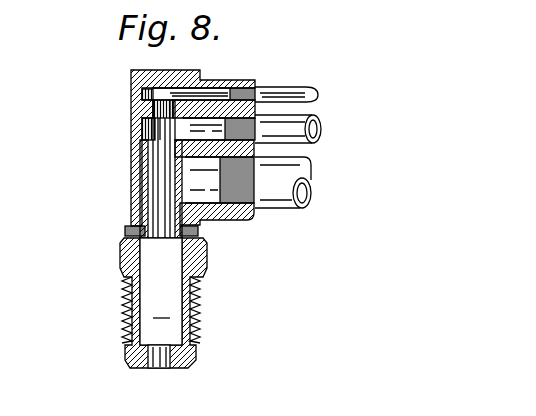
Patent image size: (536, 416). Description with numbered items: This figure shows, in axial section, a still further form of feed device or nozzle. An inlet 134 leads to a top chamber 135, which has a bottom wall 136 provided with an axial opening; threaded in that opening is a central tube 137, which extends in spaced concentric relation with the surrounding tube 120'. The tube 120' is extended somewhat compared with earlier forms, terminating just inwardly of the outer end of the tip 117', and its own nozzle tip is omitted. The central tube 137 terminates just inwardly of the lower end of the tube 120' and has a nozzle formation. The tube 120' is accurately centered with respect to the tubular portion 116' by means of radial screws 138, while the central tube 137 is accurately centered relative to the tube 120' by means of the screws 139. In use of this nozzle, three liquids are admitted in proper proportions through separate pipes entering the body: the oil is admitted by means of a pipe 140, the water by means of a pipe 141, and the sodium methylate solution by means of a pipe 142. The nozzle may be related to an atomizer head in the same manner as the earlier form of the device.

The inlet 134 is at (212, 95).
The top chamber 135 is at (141, 91).
The bottom wall 136 is at (128, 113).
The central tube 137 is at (160, 165).
The tube 120' is at (127, 242).
The tubular portion 116' is at (105, 233).
The radial screws 138 is at (200, 233).
The tip 117' is at (199, 303).
The screws 139 is at (171, 307).
The pipe 140 is at (283, 178).
The pipe 141 is at (307, 124).
The pipe 142 is at (298, 93).